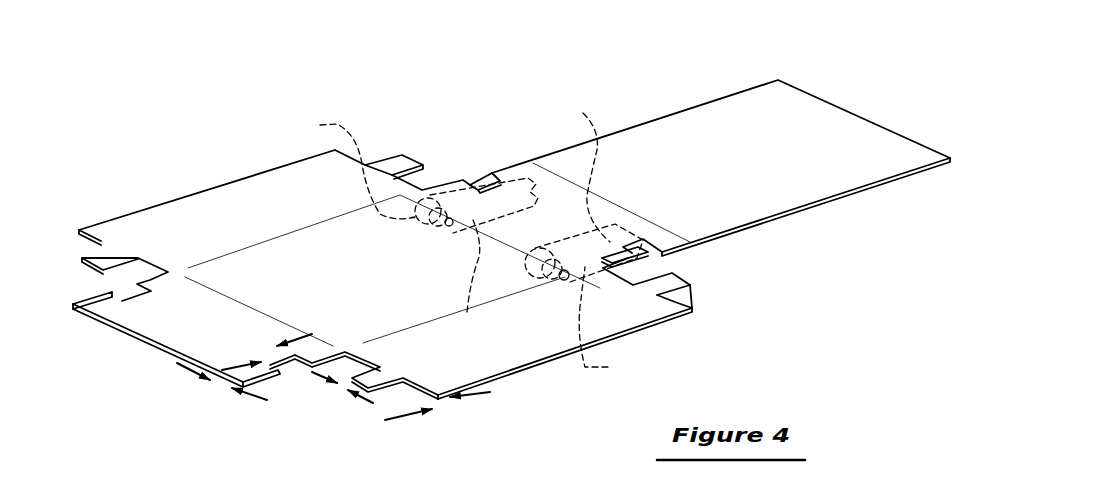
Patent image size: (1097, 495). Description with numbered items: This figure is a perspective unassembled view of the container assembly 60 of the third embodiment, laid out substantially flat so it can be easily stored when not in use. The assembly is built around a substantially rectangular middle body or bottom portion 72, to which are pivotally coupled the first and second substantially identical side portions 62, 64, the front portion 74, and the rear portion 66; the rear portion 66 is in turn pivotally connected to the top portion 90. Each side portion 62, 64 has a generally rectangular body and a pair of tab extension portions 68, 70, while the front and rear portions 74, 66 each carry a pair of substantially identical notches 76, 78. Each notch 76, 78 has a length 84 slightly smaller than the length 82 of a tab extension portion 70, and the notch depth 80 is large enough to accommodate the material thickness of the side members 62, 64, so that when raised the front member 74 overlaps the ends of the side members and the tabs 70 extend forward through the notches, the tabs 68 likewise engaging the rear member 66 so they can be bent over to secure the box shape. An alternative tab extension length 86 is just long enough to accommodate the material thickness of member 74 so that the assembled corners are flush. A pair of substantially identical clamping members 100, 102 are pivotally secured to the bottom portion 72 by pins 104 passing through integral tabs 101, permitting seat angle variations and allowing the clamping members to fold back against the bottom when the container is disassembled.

The container assembly 60 is at (666, 71).
The first side portion 62 is at (254, 218).
The second side portion 64 is at (524, 343).
The rear portion 66 is at (562, 216).
The tab extension portion 68 is at (399, 155).
The tab extension portion 70 is at (110, 258).
The middle body portion 72 is at (418, 274).
The front portion 74 is at (214, 339).
The notch 76 is at (482, 183).
The notch 78 is at (647, 249).
The notch depth 80 is at (181, 369).
The tab extension length 82 is at (367, 400).
The notch length 84 is at (303, 336).
The tab extension length 86 is at (490, 392).
The top portion 90 is at (746, 170).
The clamping member 100 is at (573, 170).
The integral tab 101 is at (349, 167).
The clamping member 102 is at (472, 279).
The pin 104 is at (616, 322).